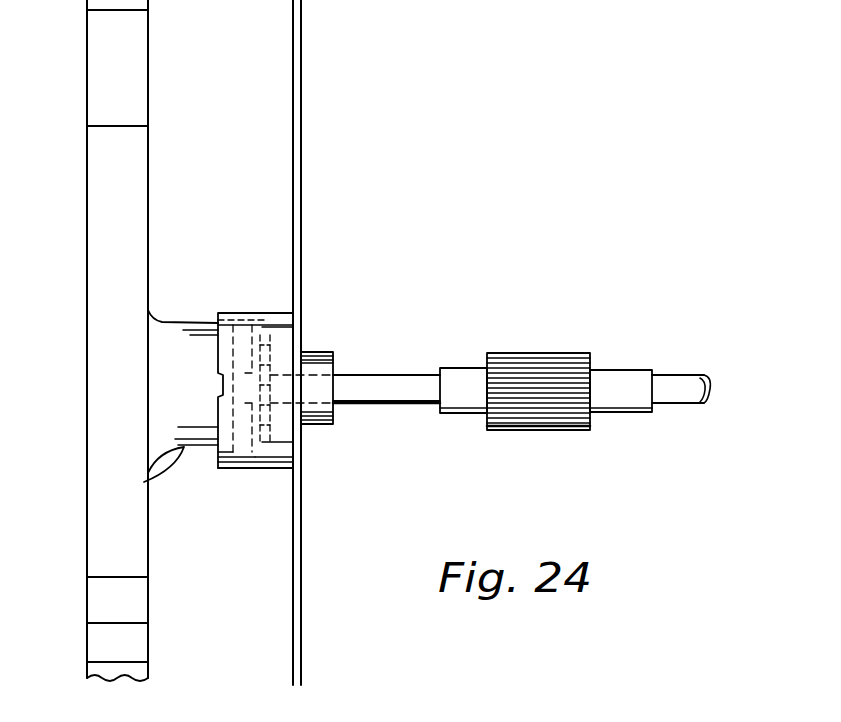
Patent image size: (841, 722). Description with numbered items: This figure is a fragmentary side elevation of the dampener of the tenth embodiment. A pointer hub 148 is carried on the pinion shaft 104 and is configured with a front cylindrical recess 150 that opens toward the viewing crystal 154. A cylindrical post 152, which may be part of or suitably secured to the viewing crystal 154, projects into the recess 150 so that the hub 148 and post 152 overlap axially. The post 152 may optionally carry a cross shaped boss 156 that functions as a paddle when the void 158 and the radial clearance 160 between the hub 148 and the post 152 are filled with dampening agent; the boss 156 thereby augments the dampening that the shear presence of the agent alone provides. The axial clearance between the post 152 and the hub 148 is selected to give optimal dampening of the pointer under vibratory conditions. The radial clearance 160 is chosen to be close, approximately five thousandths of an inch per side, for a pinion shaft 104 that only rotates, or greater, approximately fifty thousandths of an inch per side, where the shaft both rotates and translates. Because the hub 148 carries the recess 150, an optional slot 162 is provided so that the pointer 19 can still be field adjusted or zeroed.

The pointer 19 is at (301, 50).
The pinion shaft 104 is at (545, 353).
The pointer hub 148 is at (274, 466).
The front cylindrical recess 150 is at (239, 460).
The cylindrical post 152 is at (148, 480).
The viewing crystal 154 is at (95, 270).
The cross shaped boss 156 is at (240, 330).
The void 158 is at (256, 326).
The radial clearance 160 is at (230, 456).
The slot 162 is at (218, 313).